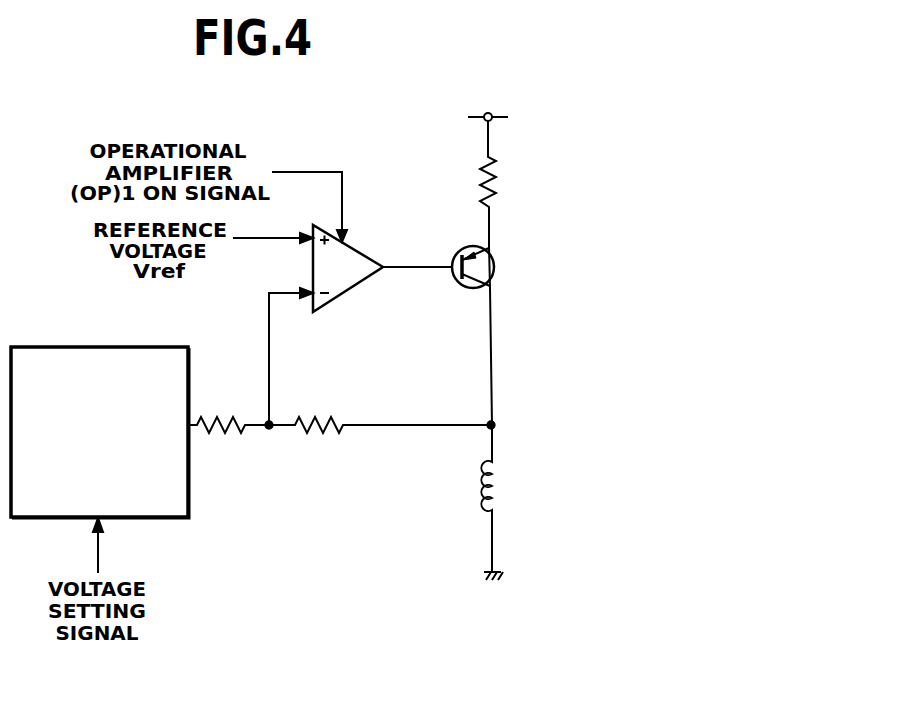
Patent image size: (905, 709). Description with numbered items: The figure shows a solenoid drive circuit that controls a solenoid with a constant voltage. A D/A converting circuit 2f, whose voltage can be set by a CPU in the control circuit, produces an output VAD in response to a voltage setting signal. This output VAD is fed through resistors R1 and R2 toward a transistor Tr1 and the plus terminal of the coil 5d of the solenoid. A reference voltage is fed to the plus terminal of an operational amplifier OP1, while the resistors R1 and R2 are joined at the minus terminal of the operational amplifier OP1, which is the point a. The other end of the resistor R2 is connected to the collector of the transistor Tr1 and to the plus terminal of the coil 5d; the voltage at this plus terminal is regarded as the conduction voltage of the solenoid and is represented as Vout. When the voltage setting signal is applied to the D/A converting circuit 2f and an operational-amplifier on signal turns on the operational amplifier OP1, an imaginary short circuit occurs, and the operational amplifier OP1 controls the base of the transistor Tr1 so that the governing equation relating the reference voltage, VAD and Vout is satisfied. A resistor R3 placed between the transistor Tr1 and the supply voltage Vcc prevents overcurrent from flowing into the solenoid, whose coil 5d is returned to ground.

The D/A converting circuit 2f is at (48, 347).
The resistor R1 is at (222, 432).
The resistor R2 is at (322, 433).
The resistor R3 is at (497, 190).
The point a is at (273, 430).
The operational amplifier OP1 is at (364, 254).
The transistor Tr1 is at (495, 268).
The coil 5d is at (502, 489).
The supply voltage Vcc is at (507, 117).
The conduction voltage Vout is at (499, 424).
The output of the D/A converting circuit VAD is at (192, 430).